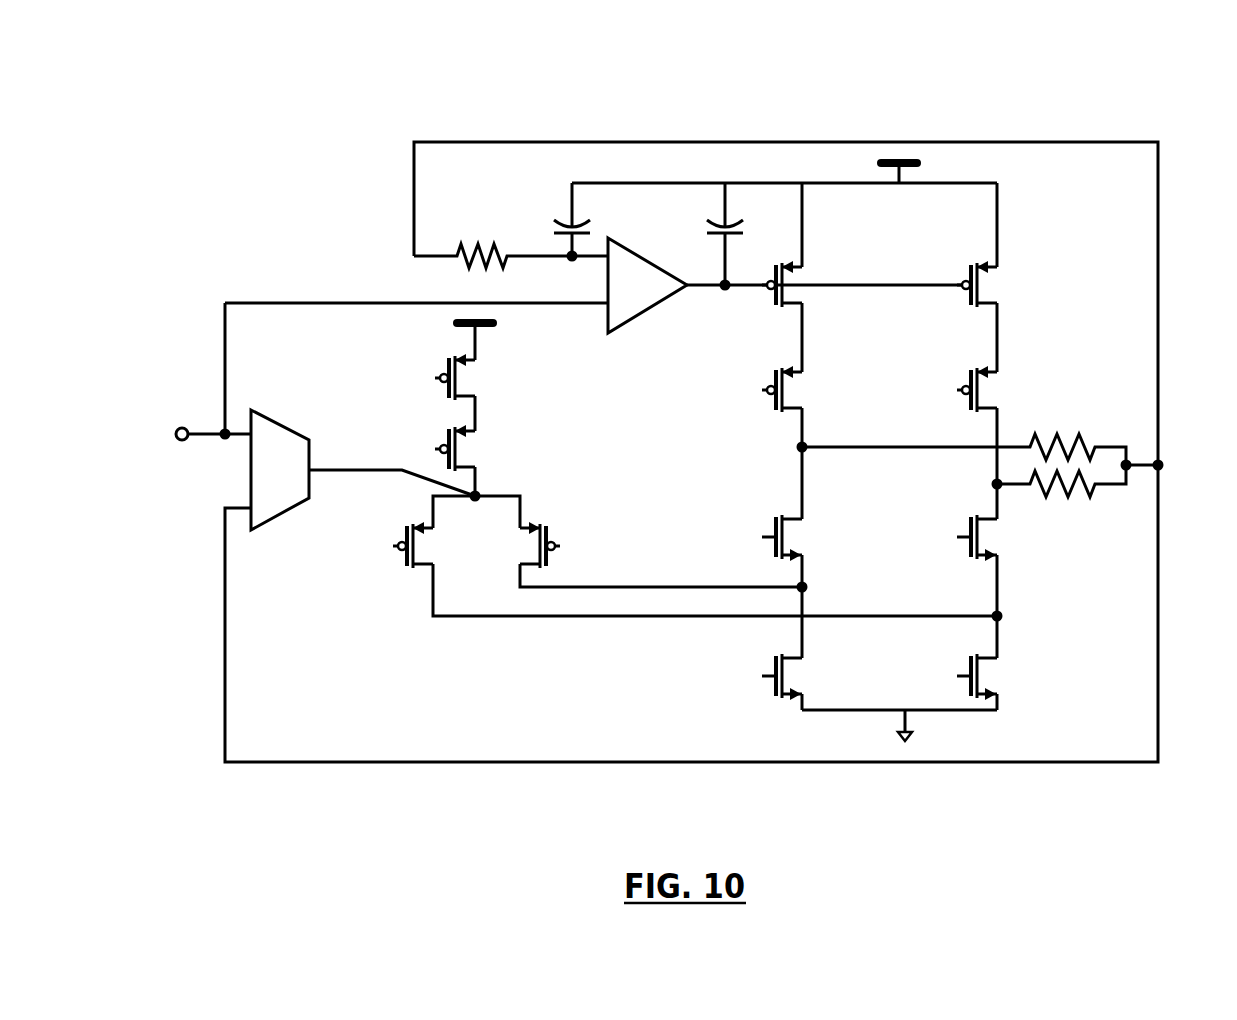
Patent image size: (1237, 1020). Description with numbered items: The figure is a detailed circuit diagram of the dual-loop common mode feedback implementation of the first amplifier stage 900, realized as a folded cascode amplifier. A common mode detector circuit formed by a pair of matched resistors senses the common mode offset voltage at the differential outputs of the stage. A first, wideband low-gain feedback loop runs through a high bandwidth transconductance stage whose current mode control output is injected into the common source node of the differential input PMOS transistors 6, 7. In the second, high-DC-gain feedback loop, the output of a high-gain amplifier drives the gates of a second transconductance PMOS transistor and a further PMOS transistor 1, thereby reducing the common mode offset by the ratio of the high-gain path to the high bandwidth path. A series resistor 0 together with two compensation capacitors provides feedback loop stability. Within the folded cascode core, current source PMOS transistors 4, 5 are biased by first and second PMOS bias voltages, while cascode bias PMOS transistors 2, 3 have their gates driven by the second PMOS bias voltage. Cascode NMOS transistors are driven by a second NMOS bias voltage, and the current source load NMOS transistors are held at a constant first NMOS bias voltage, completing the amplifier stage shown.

The first amplifier stage 900 is at (1152, 62).
The resistor R0 0 is at (511, 248).
The transistor P1 1 is at (993, 284).
The transistor P2 2 is at (993, 389).
The transistor P3 3 is at (799, 389).
The transistor P4 4 is at (472, 377).
The transistor P5 5 is at (472, 448).
The transistor P6 6 is at (430, 545).
The transistor P7 7 is at (529, 545).